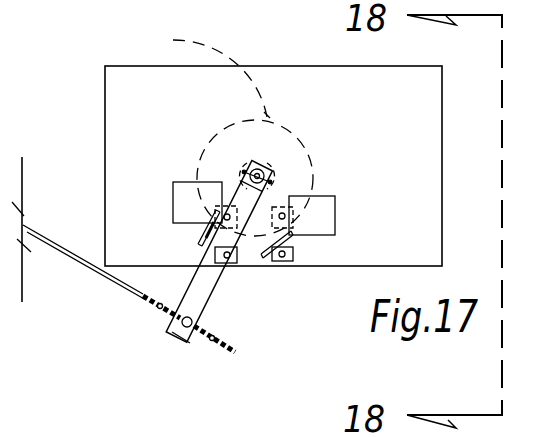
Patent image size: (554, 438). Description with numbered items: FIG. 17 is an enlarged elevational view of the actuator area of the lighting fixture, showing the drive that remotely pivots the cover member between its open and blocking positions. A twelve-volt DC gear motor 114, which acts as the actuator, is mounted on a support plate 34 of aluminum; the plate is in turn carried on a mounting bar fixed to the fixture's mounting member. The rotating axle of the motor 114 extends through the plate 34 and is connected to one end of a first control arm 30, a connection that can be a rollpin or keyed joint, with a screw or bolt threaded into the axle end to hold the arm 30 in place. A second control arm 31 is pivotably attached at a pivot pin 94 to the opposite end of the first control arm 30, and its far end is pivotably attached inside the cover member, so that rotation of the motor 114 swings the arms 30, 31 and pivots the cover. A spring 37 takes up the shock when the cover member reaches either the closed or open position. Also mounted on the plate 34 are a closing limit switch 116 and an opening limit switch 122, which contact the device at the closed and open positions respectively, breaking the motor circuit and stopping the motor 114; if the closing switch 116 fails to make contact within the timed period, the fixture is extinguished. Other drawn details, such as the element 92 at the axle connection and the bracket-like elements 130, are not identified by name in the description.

The support plate 34 is at (125, 66).
The motor 114 is at (7, 437).
The opening limit switch 122 is at (173, 193).
The closing limit switch 116 is at (335, 202).
The bracket 130 is at (296, 247).
The spring 37 is at (200, 322).
The pivot 92 is at (262, 160).
The first control arm 30 is at (177, 340).
The pivot pin 94 is at (182, 345).
The second control arm 31 is at (128, 294).